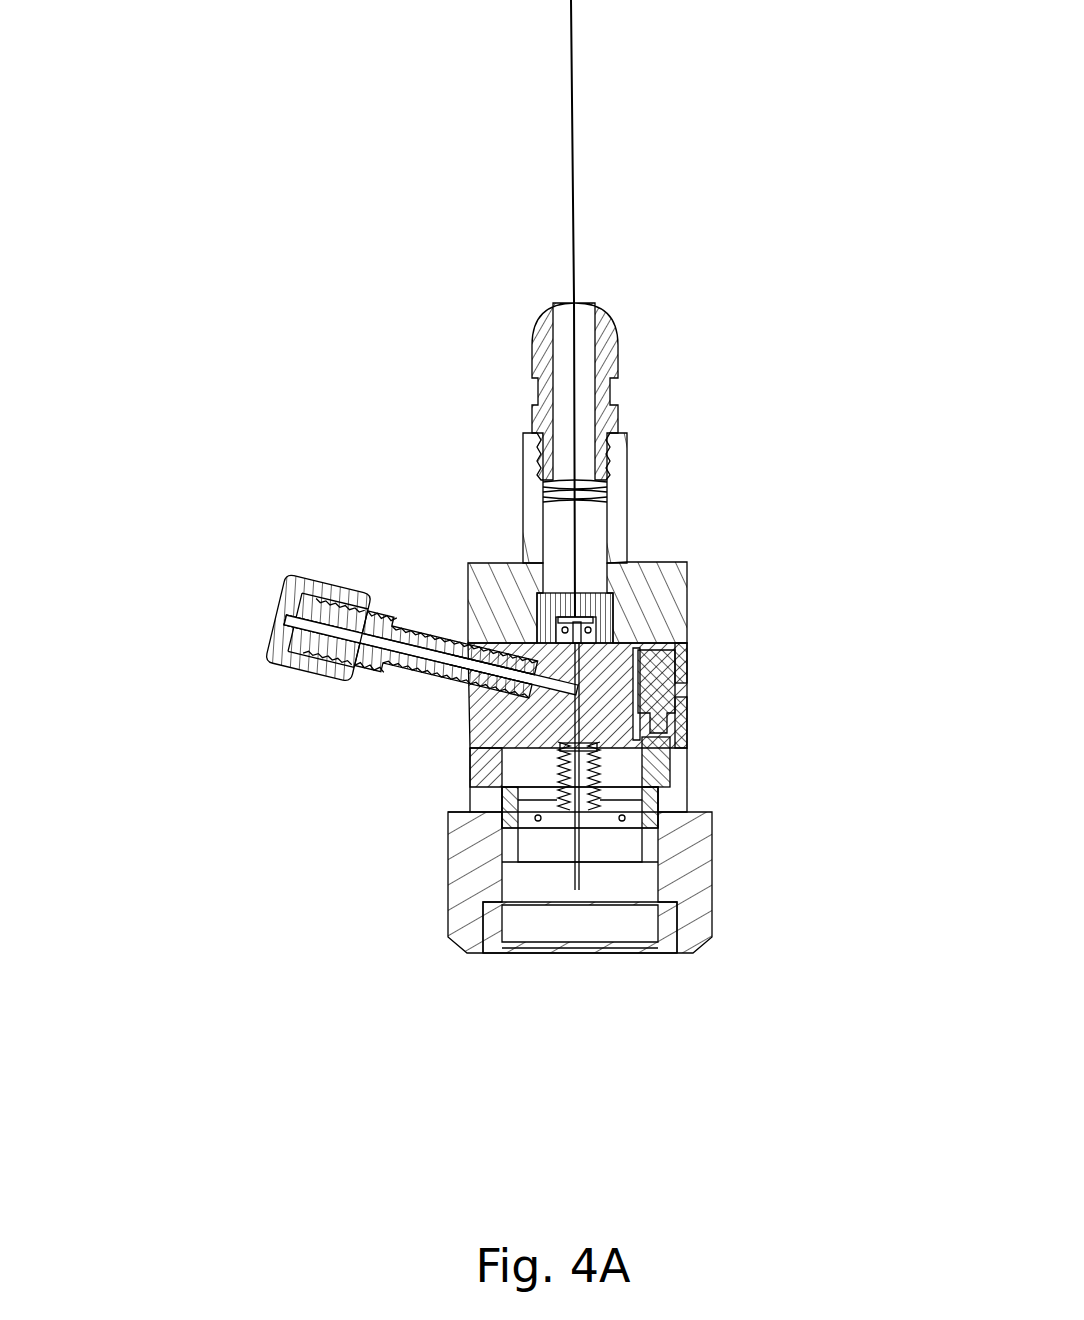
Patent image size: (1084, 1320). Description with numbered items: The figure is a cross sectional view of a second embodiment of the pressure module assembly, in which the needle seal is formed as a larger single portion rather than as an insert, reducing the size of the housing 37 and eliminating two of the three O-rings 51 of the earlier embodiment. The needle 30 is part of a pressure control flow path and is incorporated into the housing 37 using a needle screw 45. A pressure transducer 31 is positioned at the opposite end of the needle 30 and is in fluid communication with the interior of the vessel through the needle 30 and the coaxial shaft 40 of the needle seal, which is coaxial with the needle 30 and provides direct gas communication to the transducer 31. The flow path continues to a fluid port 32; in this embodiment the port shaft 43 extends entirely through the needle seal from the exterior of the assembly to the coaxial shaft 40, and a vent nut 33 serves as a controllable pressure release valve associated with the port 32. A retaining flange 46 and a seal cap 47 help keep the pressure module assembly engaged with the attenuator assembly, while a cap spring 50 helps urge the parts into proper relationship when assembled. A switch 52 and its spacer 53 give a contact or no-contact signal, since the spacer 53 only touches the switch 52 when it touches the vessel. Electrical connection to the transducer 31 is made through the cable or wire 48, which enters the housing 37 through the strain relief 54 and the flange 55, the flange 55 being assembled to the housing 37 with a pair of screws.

The needle 30 is at (460, 822).
The pressure transducer 31 is at (622, 617).
The fluid port 32 is at (415, 630).
The vent nut 33 is at (268, 633).
The housing 37 is at (649, 796).
The coaxial shaft 40 is at (577, 717).
The port shaft 43 is at (450, 640).
The needle screw 45 is at (548, 768).
The retaining flange 46 is at (628, 1006).
The seal cap 47 is at (490, 868).
The cable or wire 48 is at (580, 208).
The cap spring 50 is at (545, 800).
The O-ring 51 is at (454, 542).
The switch 52 is at (672, 700).
The spacer 53 is at (690, 792).
The strain relief 54 is at (622, 364).
The flange 55 is at (632, 491).